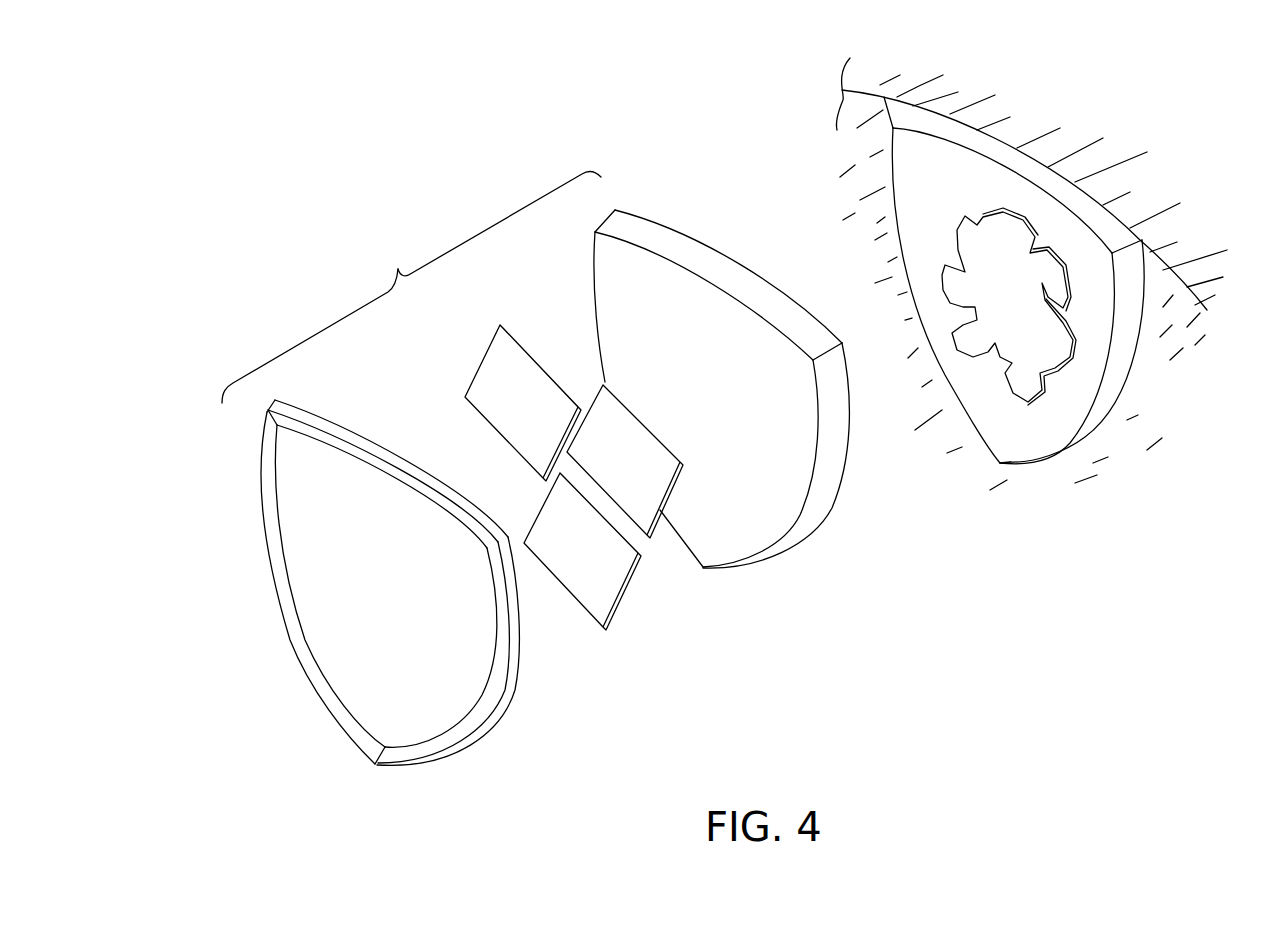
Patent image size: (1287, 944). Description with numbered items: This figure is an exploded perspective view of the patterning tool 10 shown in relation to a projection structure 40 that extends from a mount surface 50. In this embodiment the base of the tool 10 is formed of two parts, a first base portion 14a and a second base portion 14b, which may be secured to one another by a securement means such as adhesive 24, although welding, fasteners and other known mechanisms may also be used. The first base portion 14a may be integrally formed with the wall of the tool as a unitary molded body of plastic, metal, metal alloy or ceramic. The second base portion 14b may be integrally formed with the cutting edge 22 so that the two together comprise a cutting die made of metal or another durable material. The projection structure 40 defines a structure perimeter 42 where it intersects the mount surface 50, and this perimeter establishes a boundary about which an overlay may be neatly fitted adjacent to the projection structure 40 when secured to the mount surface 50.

The tool 10 is at (411, 287).
The first base portion 14a is at (766, 519).
The second base portion 14b is at (332, 597).
The cutting edge 22 is at (258, 517).
The adhesive 24 is at (624, 608).
The projection structure 40 is at (992, 156).
The structure perimeter 42 is at (1135, 353).
The mount surface 50 is at (1163, 260).